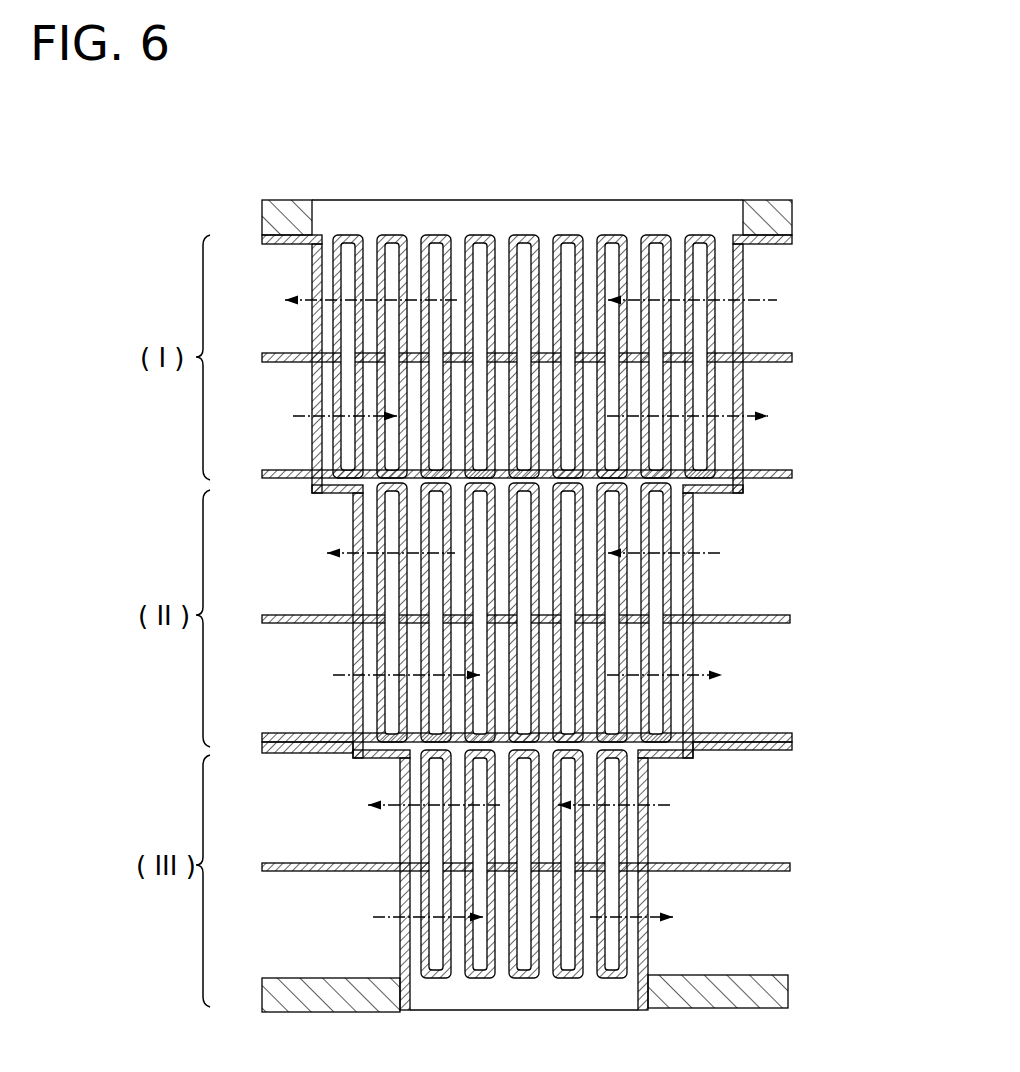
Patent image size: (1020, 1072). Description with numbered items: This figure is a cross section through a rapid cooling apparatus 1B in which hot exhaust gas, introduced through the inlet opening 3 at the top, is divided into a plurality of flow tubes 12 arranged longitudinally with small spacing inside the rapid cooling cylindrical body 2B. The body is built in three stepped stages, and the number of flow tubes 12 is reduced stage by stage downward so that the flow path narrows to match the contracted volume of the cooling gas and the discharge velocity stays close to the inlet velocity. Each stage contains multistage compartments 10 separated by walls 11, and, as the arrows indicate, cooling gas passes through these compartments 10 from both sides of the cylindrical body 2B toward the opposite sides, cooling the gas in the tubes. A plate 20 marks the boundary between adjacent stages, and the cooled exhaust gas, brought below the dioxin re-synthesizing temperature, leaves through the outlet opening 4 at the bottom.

The inlet opening 3 is at (433, 215).
The flow tubes 12 is at (545, 245).
The rapid cooling apparatus 1B is at (770, 192).
The rapid cooling cylindrical body 2B is at (745, 276).
The compartments 10 is at (340, 323).
The walls 11 is at (782, 361).
The partition plate 20 is at (745, 447).
The outlet opening 4 is at (580, 1000).